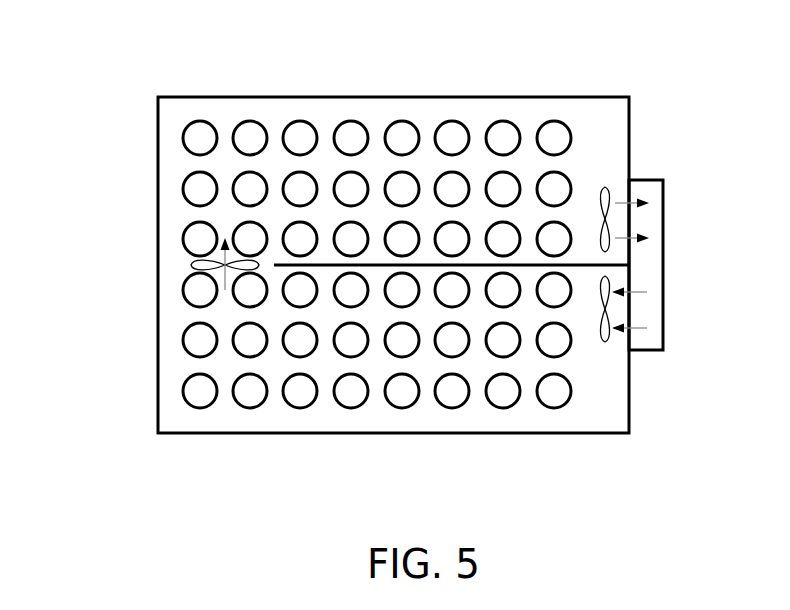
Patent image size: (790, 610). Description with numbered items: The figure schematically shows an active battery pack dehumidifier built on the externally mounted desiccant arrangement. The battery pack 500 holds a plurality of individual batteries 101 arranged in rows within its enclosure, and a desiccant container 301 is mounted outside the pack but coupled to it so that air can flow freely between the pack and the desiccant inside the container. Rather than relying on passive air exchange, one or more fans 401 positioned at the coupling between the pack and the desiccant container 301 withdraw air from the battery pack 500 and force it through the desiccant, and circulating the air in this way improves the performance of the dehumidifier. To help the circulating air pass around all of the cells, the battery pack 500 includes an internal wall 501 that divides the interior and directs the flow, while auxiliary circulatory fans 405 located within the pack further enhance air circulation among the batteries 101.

The battery pack 500 is at (372, 78).
The internal wall 501 is at (474, 265).
The individual batteries 101 is at (452, 342).
The desiccant container 301 is at (653, 180).
The fans 401 is at (605, 187).
The auxiliary circulatory fans 405 is at (193, 266).